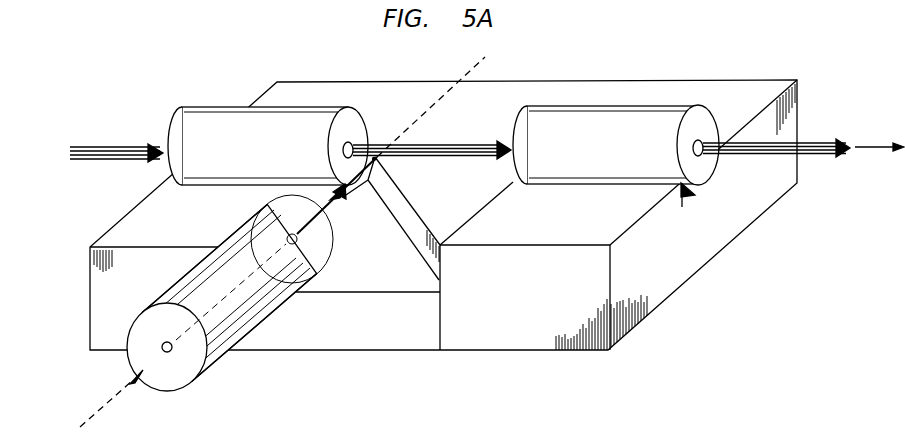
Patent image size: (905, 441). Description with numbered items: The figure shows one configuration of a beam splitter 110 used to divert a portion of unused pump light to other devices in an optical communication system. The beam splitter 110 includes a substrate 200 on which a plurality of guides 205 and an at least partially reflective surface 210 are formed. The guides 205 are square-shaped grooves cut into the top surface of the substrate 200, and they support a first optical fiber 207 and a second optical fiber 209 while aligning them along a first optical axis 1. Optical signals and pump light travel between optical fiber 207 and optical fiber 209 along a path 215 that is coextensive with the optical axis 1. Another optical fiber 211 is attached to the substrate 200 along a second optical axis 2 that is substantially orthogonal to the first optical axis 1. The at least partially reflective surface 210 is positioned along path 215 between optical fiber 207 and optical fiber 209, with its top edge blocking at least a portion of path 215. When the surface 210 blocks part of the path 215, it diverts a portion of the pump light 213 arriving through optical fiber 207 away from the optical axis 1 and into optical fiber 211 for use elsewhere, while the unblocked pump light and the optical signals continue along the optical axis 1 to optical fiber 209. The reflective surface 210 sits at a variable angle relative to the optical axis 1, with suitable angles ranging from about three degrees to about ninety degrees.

The beam splitter 110 is at (761, 330).
The substrate 200 is at (537, 303).
The guides 205 is at (345, 199).
The first optical fiber 207 is at (362, 113).
The second optical fiber 209 is at (704, 112).
The at least partially reflective surface 210 is at (417, 248).
The optical fiber 211 is at (283, 304).
The pump light 213 is at (338, 193).
The path 215 is at (434, 143).
The optical axis 1-1' 1 is at (64, 156).
The optical axis 2-2' 2 is at (91, 417).